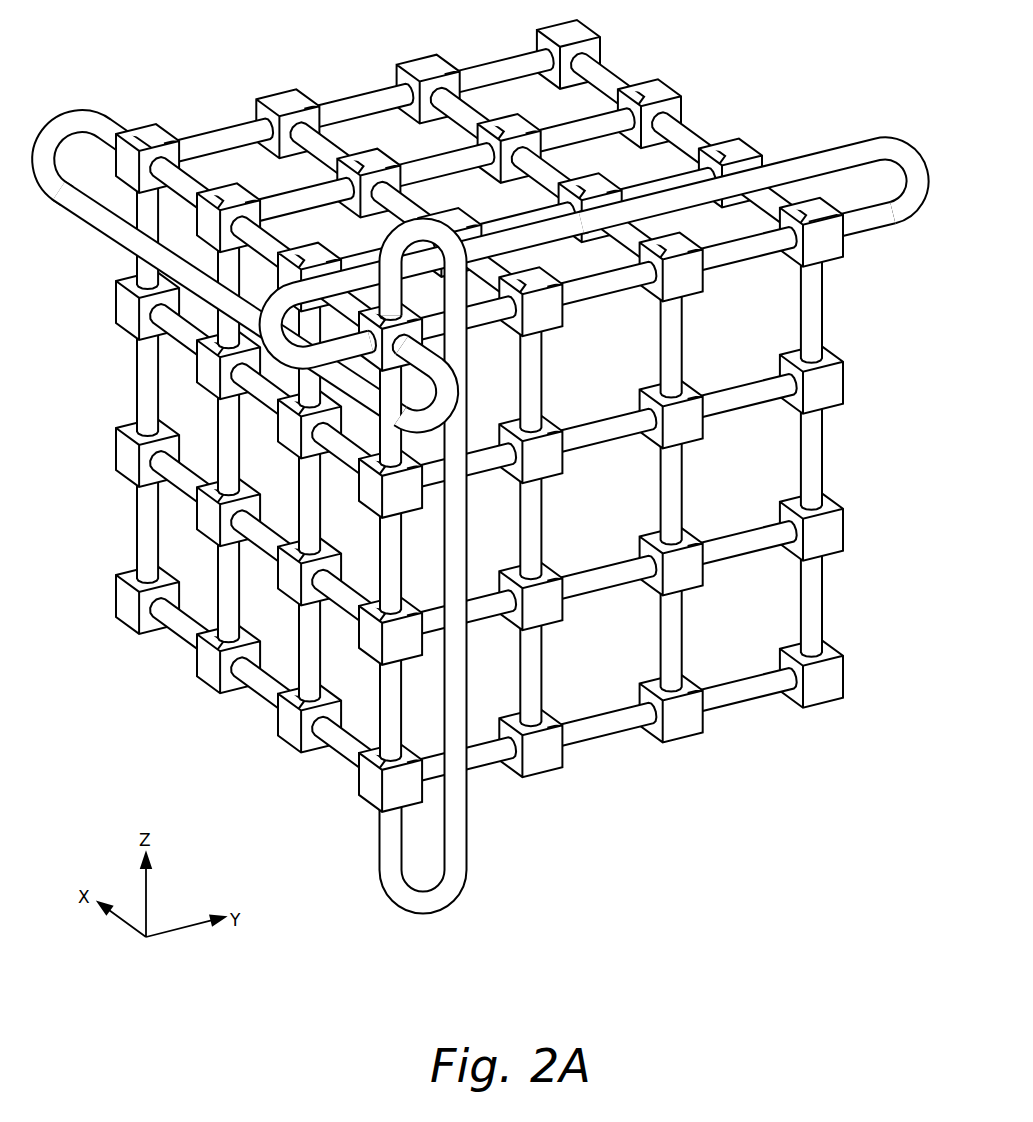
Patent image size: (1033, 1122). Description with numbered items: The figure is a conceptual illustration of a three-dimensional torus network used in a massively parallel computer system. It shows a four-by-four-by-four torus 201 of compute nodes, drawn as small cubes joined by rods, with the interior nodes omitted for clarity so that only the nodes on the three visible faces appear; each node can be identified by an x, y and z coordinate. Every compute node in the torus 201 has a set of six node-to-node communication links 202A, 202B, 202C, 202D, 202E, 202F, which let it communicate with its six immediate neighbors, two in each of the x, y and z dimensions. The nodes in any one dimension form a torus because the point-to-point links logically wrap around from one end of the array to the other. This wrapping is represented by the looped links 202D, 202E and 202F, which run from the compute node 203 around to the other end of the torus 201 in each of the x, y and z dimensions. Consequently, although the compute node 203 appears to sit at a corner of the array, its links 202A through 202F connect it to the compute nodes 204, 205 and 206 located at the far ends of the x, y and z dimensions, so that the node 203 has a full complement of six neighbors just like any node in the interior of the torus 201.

The torus 201 is at (480, 494).
The node-to-node communication link 202A is at (475, 316).
The node-to-node communication link 202B is at (393, 443).
The node-to-node communication link 202C is at (353, 307).
The node-to-node communication link 202D is at (855, 150).
The node-to-node communication link 202E is at (424, 915).
The node-to-node communication link 202F is at (80, 116).
The compute node 203 is at (413, 333).
The compute node 204 is at (155, 125).
The compute node 205 is at (830, 253).
The compute node 206 is at (367, 792).